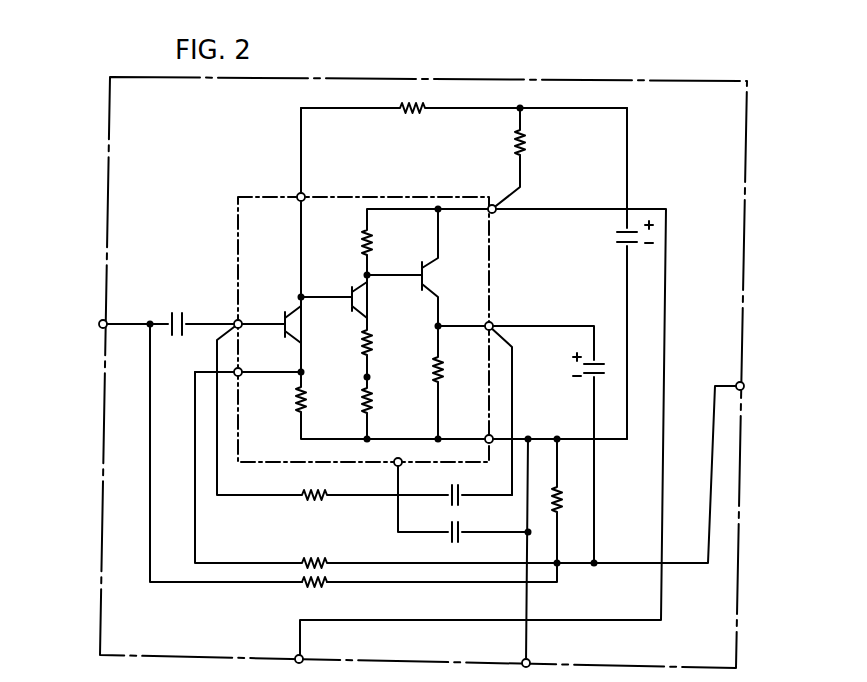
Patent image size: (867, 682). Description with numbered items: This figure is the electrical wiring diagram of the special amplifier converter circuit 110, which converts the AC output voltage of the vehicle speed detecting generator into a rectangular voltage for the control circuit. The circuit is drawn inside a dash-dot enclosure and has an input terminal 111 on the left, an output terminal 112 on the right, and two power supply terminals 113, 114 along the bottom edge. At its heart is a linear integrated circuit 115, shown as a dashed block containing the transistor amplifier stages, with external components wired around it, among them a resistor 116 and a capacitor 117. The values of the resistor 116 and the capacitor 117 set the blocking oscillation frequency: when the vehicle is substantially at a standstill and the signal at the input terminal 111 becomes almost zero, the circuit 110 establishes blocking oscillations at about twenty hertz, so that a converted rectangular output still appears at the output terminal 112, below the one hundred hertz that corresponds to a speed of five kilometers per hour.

The special amplifier converter circuit 110 is at (622, 80).
The input terminal 111 is at (107, 318).
The output terminal 112 is at (738, 382).
The power supply terminal 113 is at (303, 655).
The power supply terminal 114 is at (530, 657).
The linear integrated circuit 115 is at (295, 195).
The resistor 116 is at (302, 590).
The capacitor 117 is at (450, 541).